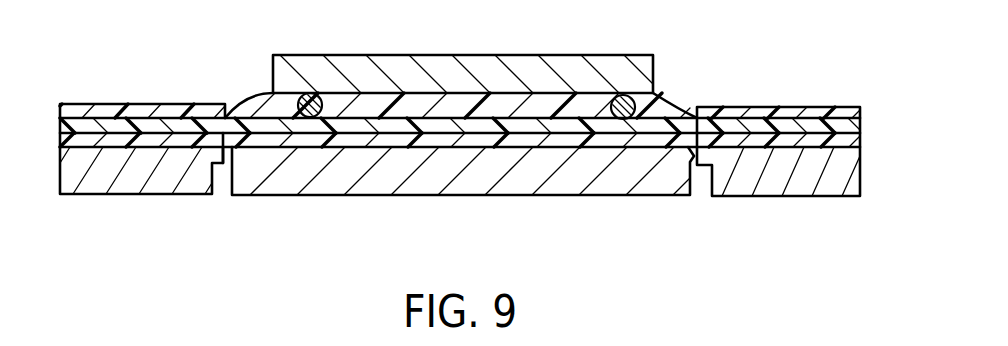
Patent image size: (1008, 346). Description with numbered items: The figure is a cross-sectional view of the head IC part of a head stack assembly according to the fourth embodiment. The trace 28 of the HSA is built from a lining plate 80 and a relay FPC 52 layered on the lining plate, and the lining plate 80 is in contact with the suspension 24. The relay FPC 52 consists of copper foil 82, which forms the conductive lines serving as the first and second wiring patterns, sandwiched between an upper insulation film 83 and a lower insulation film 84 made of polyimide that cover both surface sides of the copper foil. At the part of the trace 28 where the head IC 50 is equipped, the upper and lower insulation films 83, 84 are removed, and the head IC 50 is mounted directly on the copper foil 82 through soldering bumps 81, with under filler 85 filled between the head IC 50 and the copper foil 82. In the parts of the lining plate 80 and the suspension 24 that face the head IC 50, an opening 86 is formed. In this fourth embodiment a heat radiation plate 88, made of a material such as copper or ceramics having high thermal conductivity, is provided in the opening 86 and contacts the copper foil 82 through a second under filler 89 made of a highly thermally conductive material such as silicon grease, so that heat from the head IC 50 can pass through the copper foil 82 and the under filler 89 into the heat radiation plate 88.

The trace 28 is at (92, 84).
The relay FPC 52 is at (129, 99).
The upper insulation film 83 is at (181, 111).
The copper foil 82 is at (207, 116).
The lower insulation film 84 is at (180, 141).
The suspension 24 is at (78, 181).
The lining plate 80 is at (130, 157).
The head IC 50 is at (448, 63).
The under filler 85 is at (654, 108).
The soldering bumps 81 is at (312, 94).
The heat radiation plate 88 is at (543, 180).
The opening 86 is at (228, 151).
The under filler 89 is at (629, 142).